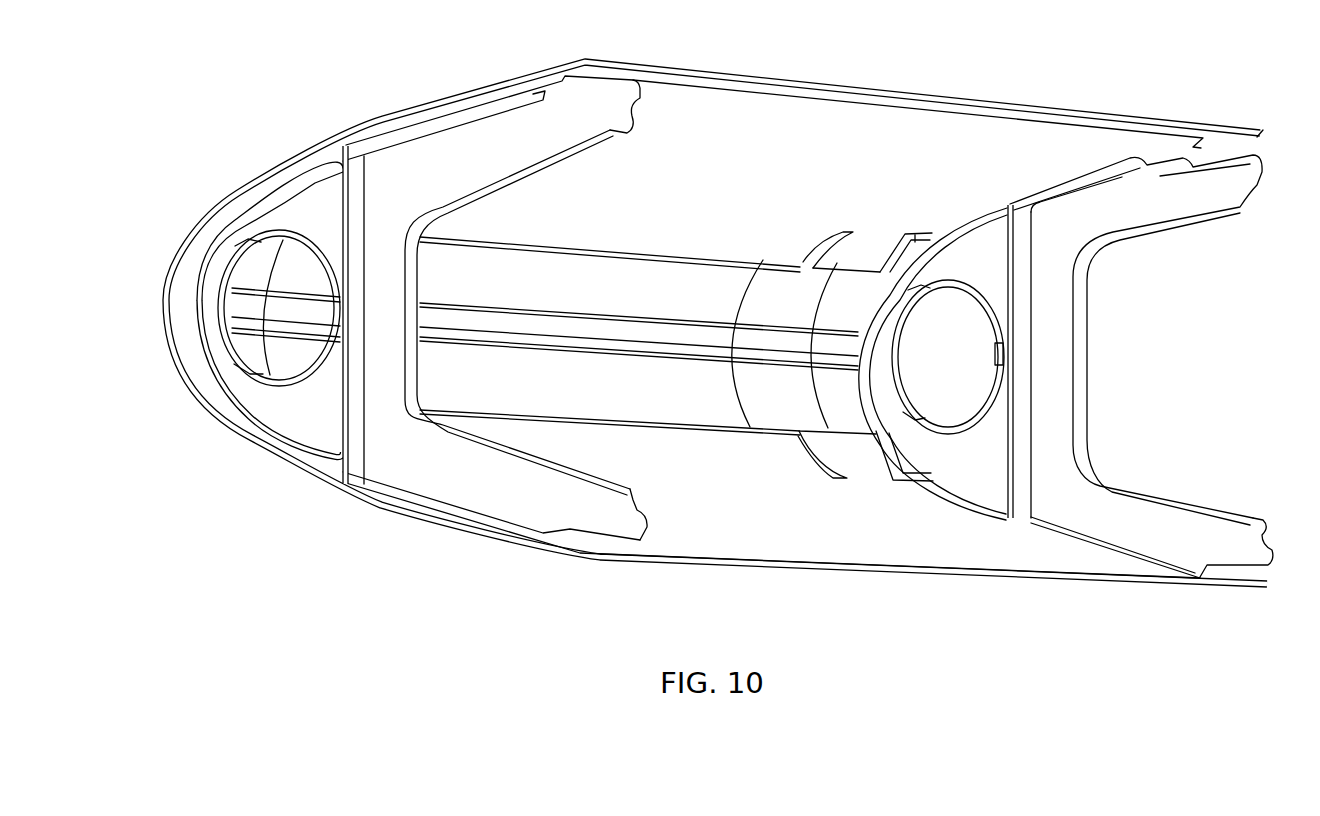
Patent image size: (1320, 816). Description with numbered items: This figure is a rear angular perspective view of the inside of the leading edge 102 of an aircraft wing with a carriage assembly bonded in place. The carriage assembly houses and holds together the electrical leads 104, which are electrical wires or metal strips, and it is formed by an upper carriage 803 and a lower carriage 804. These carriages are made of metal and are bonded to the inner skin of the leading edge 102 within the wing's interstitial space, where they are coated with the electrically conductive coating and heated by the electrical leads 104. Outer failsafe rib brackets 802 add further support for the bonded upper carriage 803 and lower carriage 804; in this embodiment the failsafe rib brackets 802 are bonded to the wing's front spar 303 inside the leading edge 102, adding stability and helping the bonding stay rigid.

The leading edge 102 is at (258, 175).
The front spar 303 is at (300, 427).
The upper carriage 803 is at (680, 265).
The lower carriage 804 is at (688, 405).
The electrical leads 104 is at (790, 272).
The failsafe rib brackets 802 is at (907, 242).